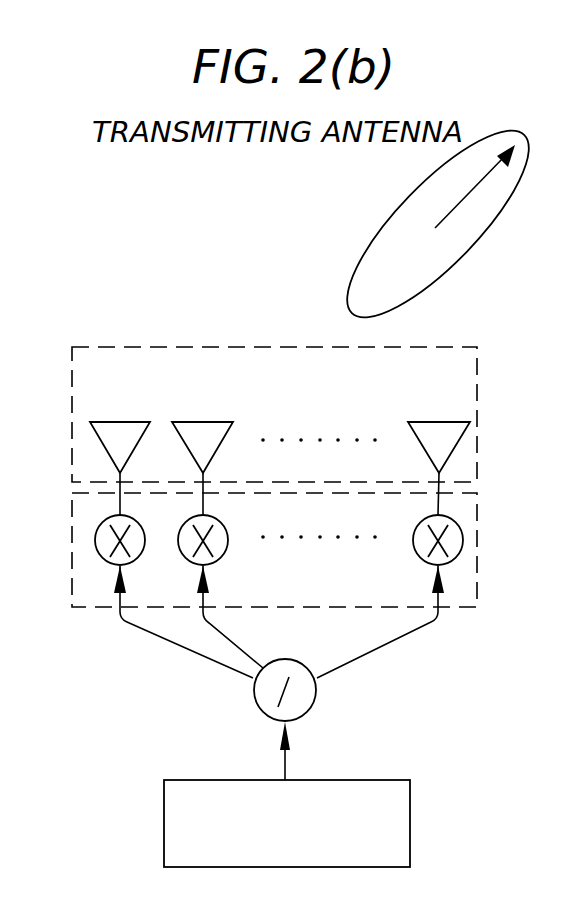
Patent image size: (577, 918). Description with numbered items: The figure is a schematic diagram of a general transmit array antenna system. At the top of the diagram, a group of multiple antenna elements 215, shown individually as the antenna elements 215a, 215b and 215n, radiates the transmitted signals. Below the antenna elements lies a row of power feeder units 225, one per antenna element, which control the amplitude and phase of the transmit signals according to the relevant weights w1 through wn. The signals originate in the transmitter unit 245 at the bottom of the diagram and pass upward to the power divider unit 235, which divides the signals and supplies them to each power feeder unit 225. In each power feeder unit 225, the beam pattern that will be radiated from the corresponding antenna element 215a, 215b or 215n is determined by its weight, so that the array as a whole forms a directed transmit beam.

The antenna elements 215 is at (311, 431).
The antenna element 215a is at (117, 447).
The antenna element 215b is at (201, 447).
The antenna element 215n is at (439, 447).
The power feeder unit 225 is at (478, 558).
The power divider unit 235 is at (316, 697).
The transmitter unit 245 is at (410, 826).